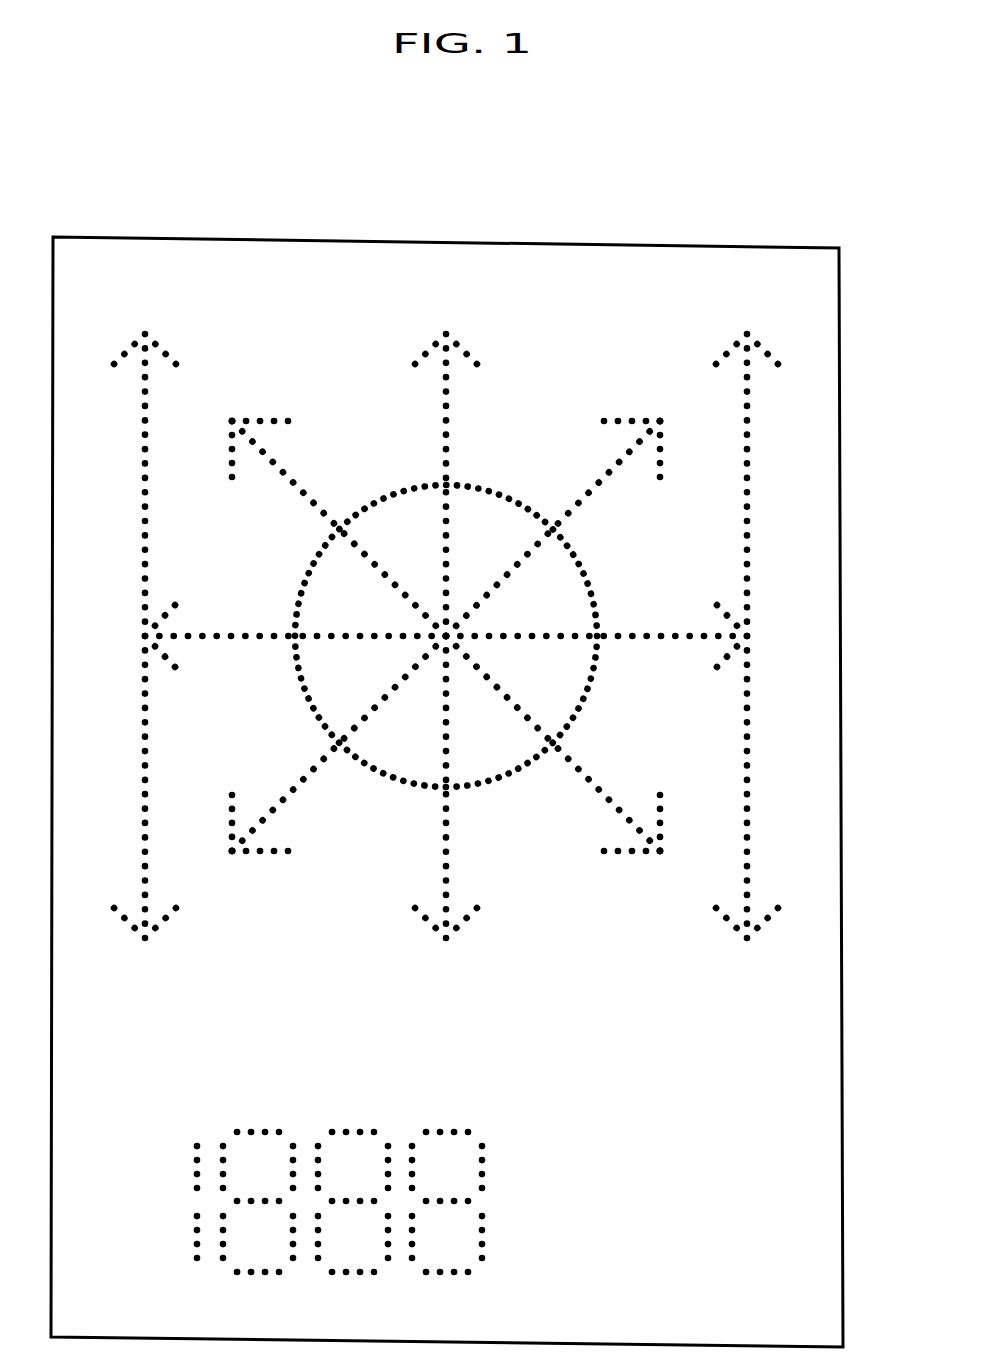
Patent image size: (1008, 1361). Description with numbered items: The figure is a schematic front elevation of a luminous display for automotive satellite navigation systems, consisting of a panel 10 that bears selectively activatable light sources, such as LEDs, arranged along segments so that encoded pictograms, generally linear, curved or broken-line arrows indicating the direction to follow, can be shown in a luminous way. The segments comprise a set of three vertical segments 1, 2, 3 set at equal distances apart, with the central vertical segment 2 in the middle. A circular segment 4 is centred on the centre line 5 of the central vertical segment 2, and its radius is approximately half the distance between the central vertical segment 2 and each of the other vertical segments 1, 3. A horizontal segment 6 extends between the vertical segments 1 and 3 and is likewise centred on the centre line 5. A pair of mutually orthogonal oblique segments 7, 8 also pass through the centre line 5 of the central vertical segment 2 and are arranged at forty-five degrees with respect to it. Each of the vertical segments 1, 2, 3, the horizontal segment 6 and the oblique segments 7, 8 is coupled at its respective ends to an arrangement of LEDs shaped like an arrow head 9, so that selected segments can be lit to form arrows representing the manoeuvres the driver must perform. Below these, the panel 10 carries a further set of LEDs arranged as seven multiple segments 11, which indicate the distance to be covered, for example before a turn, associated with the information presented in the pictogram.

The panel 10 is at (798, 215).
The vertical segment 1 is at (144, 505).
The central vertical segment 2 is at (448, 458).
The vertical segment 3 is at (745, 505).
The circular segment 4 is at (296, 679).
The centre line 5 is at (453, 645).
The horizontal segment 6 is at (637, 640).
The oblique segment 7 is at (301, 488).
The oblique segment 8 is at (308, 783).
The arrow head 9 is at (166, 353).
The seven multiple segments arrangement 11 is at (485, 1162).